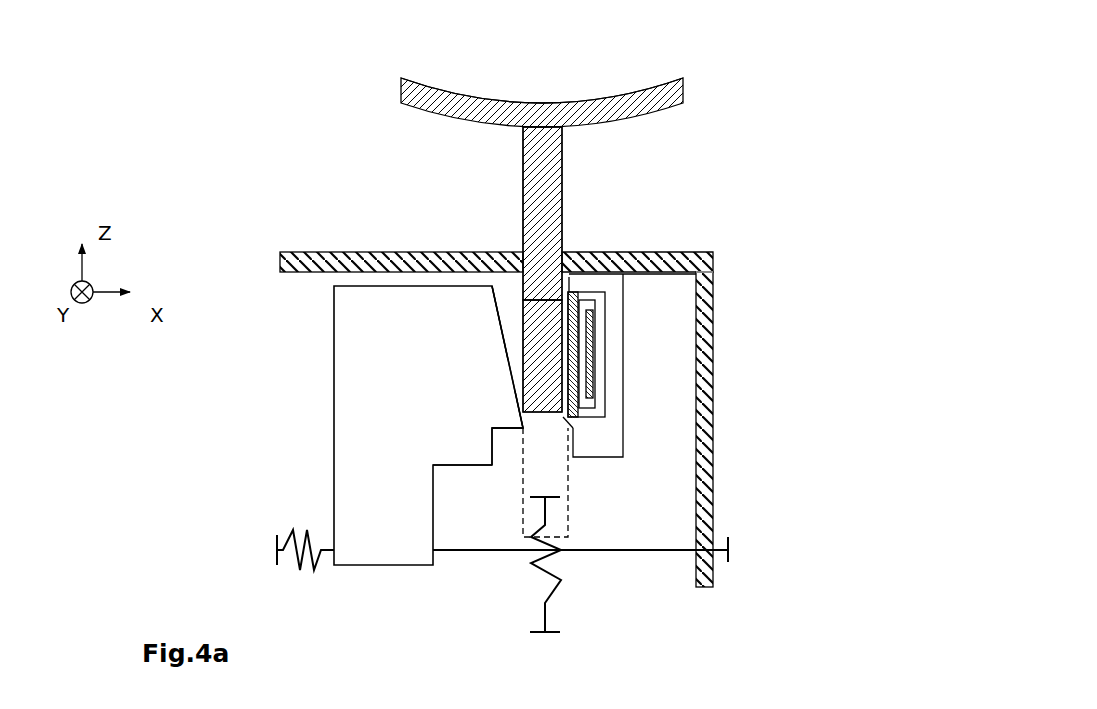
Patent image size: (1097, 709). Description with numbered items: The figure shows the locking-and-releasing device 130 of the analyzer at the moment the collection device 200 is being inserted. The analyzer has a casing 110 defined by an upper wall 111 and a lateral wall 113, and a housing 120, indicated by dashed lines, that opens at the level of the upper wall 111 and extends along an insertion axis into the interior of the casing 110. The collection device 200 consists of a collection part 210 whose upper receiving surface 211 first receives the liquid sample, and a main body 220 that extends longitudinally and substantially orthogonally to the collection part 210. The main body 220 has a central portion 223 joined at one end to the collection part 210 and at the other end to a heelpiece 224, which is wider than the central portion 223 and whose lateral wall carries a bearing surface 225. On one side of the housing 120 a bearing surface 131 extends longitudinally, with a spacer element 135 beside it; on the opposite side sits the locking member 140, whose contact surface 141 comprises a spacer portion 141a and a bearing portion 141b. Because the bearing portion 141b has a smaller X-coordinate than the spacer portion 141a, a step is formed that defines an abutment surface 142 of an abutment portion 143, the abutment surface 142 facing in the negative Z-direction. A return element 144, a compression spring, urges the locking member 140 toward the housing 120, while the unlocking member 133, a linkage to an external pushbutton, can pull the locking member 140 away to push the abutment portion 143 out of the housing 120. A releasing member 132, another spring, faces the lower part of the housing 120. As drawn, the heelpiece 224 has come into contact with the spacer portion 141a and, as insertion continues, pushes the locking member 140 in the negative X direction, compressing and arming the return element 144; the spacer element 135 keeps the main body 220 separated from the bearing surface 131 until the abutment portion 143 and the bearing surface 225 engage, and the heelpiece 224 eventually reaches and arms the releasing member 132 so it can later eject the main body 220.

The collection device 200 is at (604, 220).
The collection part 210 is at (597, 78).
The receiving surface 211 is at (663, 78).
The main body 220 is at (487, 269).
The central portion 223 is at (561, 214).
The heelpiece 224 is at (561, 362).
The bearing surface 225 is at (536, 296).
The casing 110 is at (528, 385).
The upper wall 111 is at (336, 250).
The lateral wall 113 is at (716, 497).
The housing 120 is at (574, 542).
The locking-and-releasing device 130 is at (467, 457).
The bearing surface 131 is at (573, 276).
The releasing member 132 is at (536, 600).
The unlocking member 133 is at (733, 559).
The spacer element 135 is at (573, 430).
The locking member 140 is at (330, 425).
The contact surface 141 is at (503, 301).
The spacer portion 141a is at (508, 326).
The bearing portion 141b is at (498, 464).
The abutment surface 142 is at (498, 432).
The abutment portion 143 is at (500, 412).
The return element 144 is at (275, 543).